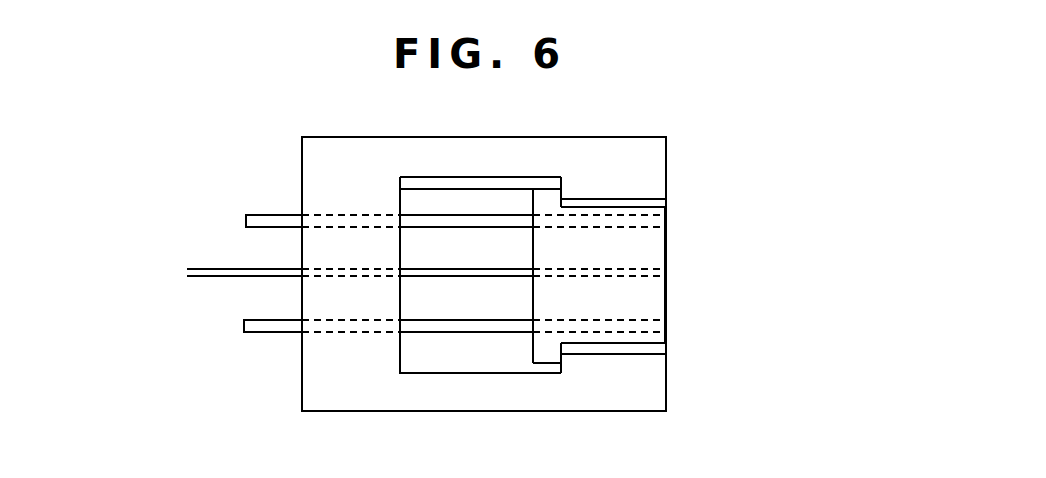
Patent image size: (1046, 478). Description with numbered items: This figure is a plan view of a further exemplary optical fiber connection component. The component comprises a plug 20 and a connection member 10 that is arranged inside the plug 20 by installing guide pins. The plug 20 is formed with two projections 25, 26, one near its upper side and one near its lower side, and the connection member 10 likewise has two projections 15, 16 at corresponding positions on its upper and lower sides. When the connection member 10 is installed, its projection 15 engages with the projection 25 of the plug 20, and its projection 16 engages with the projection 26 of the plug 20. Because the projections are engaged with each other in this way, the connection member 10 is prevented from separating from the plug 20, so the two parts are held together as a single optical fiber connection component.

The connection member 10 is at (655, 258).
The projection 15 is at (547, 193).
The projection 16 is at (548, 352).
The plug 20 is at (331, 156).
The projection 25 is at (650, 188).
The projection 26 is at (642, 367).